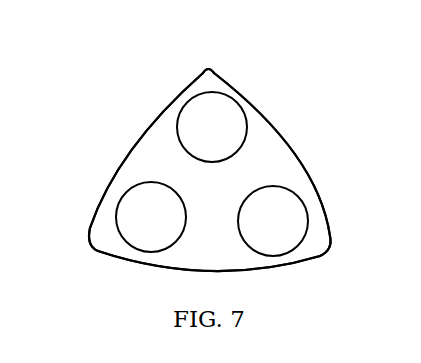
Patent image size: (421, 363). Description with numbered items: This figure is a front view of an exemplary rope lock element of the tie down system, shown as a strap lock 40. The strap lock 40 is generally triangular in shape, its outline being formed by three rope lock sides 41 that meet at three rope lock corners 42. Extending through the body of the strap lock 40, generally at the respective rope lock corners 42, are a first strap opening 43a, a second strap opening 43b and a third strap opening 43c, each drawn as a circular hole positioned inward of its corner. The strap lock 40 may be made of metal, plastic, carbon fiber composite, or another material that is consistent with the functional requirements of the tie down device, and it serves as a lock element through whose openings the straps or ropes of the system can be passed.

The strap lock 40 is at (133, 130).
The rope lock side 41 is at (125, 159).
The rope lock corner 42 is at (209, 70).
The first strap opening 43a is at (243, 108).
The second strap opening 43b is at (117, 210).
The third strap opening 43c is at (243, 230).